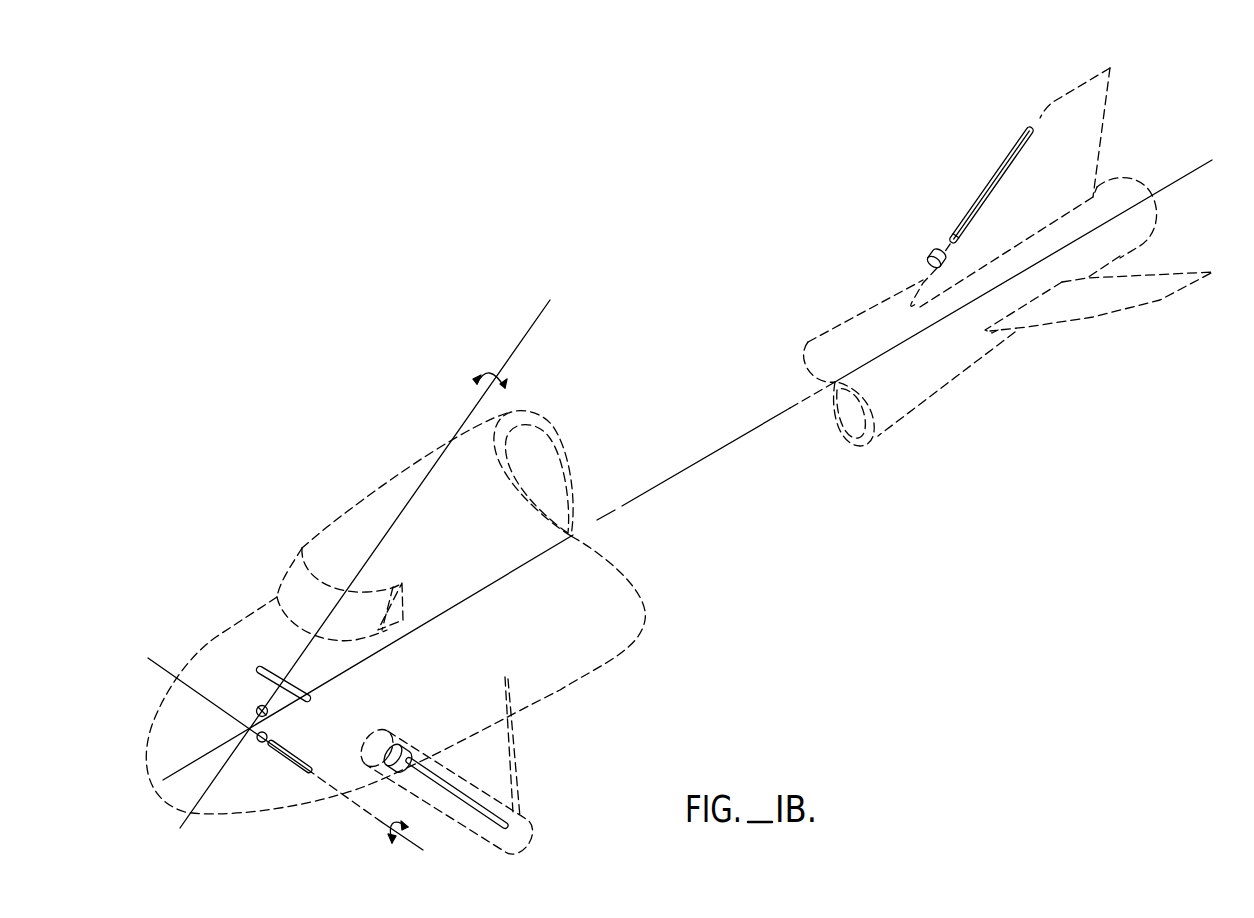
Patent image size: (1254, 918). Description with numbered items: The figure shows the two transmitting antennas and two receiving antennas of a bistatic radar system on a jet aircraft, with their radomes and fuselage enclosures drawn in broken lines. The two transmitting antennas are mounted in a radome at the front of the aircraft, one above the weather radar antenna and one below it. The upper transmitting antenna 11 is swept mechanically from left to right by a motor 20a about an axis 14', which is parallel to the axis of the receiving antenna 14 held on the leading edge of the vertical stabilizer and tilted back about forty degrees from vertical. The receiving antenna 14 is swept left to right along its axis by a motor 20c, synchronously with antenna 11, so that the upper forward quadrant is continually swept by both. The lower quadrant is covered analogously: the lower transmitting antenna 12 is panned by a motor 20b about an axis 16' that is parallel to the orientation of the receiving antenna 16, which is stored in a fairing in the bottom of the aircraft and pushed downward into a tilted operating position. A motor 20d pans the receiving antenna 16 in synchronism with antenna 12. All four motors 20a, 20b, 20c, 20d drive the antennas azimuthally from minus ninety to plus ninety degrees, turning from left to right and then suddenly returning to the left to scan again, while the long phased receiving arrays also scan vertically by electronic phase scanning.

The transmitting antenna 11 is at (264, 664).
The transmitting antenna 12 is at (319, 752).
The receiving antenna 14 is at (989, 189).
The axis 14' is at (385, 564).
The receiving antenna 16 is at (457, 798).
The axis 16' is at (285, 754).
The motor 20a is at (258, 706).
The motor 20b is at (268, 734).
The motor 20c is at (929, 259).
The motor 20d is at (406, 744).